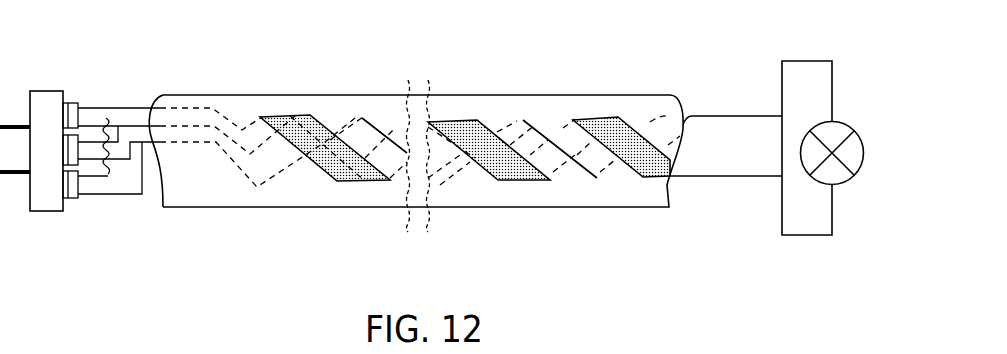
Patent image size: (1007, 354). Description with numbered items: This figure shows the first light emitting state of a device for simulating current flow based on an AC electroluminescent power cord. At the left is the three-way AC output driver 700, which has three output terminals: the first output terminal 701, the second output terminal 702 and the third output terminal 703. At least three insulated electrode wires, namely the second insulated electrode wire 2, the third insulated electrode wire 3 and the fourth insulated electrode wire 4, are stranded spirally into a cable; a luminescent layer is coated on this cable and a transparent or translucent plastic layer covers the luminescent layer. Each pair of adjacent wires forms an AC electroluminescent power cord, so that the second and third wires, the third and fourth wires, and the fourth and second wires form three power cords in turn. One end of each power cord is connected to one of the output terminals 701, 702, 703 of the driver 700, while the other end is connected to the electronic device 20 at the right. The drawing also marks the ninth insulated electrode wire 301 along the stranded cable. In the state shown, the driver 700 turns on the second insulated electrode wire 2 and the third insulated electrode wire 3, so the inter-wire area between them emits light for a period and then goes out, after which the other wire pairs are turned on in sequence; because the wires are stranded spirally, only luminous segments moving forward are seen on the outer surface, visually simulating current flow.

The three-way AC output driver 700 is at (50, 91).
The first output terminal of the three-way AC output driver 701 is at (68, 155).
The second output terminal of the three-way AC output driver 702 is at (75, 125).
The third output terminal of the three-way AC output driver 703 is at (72, 185).
The second insulated electrode wire 2 is at (260, 117).
The third insulated electrode wire 3 is at (338, 116).
The fourth insulated electrode wire 4 is at (397, 118).
The ninth insulated electrode wire 301 is at (292, 116).
The electronic device 20 is at (823, 95).